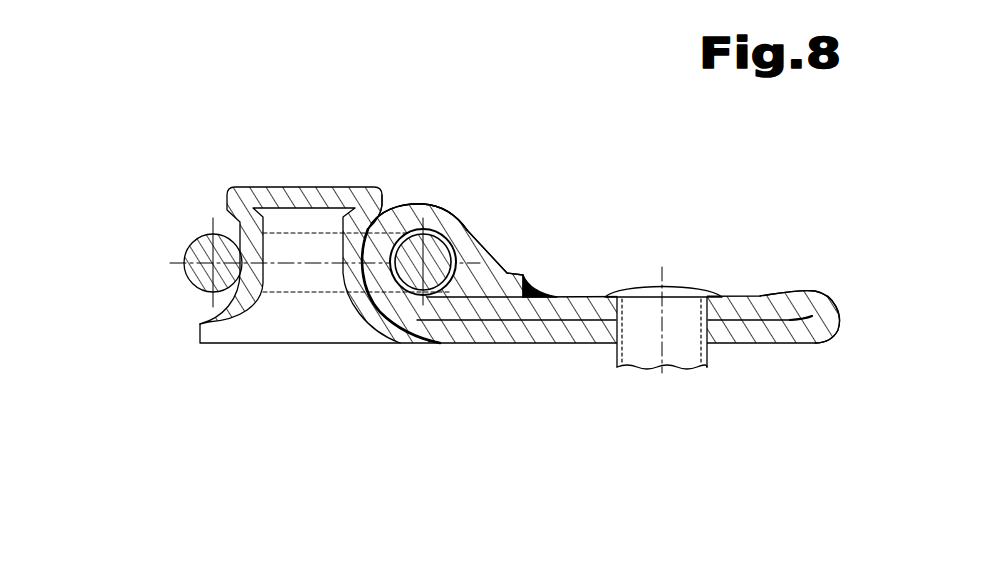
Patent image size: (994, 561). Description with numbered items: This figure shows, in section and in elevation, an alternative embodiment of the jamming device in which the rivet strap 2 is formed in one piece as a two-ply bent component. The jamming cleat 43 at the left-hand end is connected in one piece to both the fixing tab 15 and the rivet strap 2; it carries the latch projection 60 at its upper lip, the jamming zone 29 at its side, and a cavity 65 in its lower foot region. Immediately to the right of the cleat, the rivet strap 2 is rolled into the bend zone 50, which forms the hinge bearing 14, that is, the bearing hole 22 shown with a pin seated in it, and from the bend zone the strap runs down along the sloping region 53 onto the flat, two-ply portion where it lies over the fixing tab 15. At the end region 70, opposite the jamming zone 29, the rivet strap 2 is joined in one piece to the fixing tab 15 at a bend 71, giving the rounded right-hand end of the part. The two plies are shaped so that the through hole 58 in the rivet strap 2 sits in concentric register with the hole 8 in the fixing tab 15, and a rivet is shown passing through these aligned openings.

The rivet strap 2 is at (717, 225).
The hole 8 is at (700, 378).
The hinge bearing 14 is at (470, 200).
The fixing tab 15 is at (578, 378).
The bearing hole 22 is at (450, 240).
The jamming zone 29 is at (217, 217).
The jamming cleat 43 is at (290, 215).
The bend zone 50 is at (448, 190).
The sloping region 53 is at (503, 233).
The through hole 58 is at (620, 298).
The latch projection 60 is at (372, 198).
The cavity 65 is at (252, 366).
The end region 70 is at (828, 360).
The bend 71 is at (824, 278).